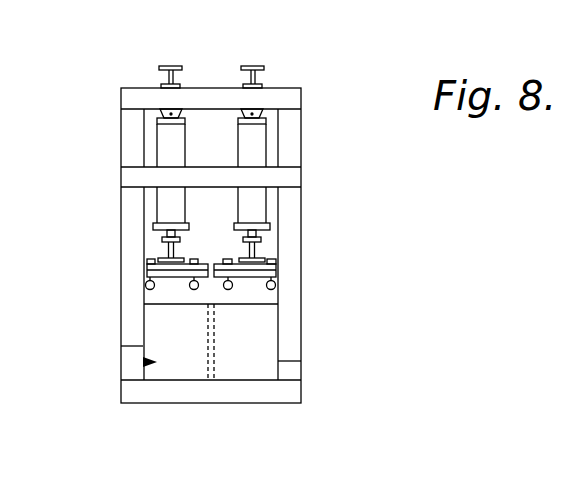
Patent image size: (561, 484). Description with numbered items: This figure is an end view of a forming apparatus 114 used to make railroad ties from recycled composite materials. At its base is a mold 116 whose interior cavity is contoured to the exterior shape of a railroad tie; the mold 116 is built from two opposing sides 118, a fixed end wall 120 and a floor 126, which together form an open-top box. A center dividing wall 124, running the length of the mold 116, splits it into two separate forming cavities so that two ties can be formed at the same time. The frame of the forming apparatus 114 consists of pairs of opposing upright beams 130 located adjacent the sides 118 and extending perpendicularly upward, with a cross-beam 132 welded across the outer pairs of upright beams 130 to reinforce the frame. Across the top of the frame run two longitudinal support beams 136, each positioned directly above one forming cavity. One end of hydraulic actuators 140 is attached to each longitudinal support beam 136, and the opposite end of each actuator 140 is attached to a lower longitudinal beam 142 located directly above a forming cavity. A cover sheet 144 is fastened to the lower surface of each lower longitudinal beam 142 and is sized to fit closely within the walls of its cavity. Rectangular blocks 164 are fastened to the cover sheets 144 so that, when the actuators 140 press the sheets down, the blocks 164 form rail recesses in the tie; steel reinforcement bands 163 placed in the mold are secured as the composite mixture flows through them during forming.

The forming apparatus 114 is at (338, 86).
The mold 116 is at (145, 362).
The opposing sides 118 is at (121, 346).
The fixed end wall 120 is at (262, 346).
The center dividing wall 124 is at (208, 380).
The floor 126 is at (260, 380).
The upright beams 130 is at (128, 320).
The cross-beam 132 is at (125, 175).
The longitudinal support beams 136 is at (160, 66).
The hydraulic actuators 140 is at (170, 137).
The lower longitudinal beam 142 is at (155, 243).
The cover sheet 144 is at (146, 266).
The steel reinforcement bands 163 is at (147, 288).
The rectangular blocks 164 is at (146, 271).